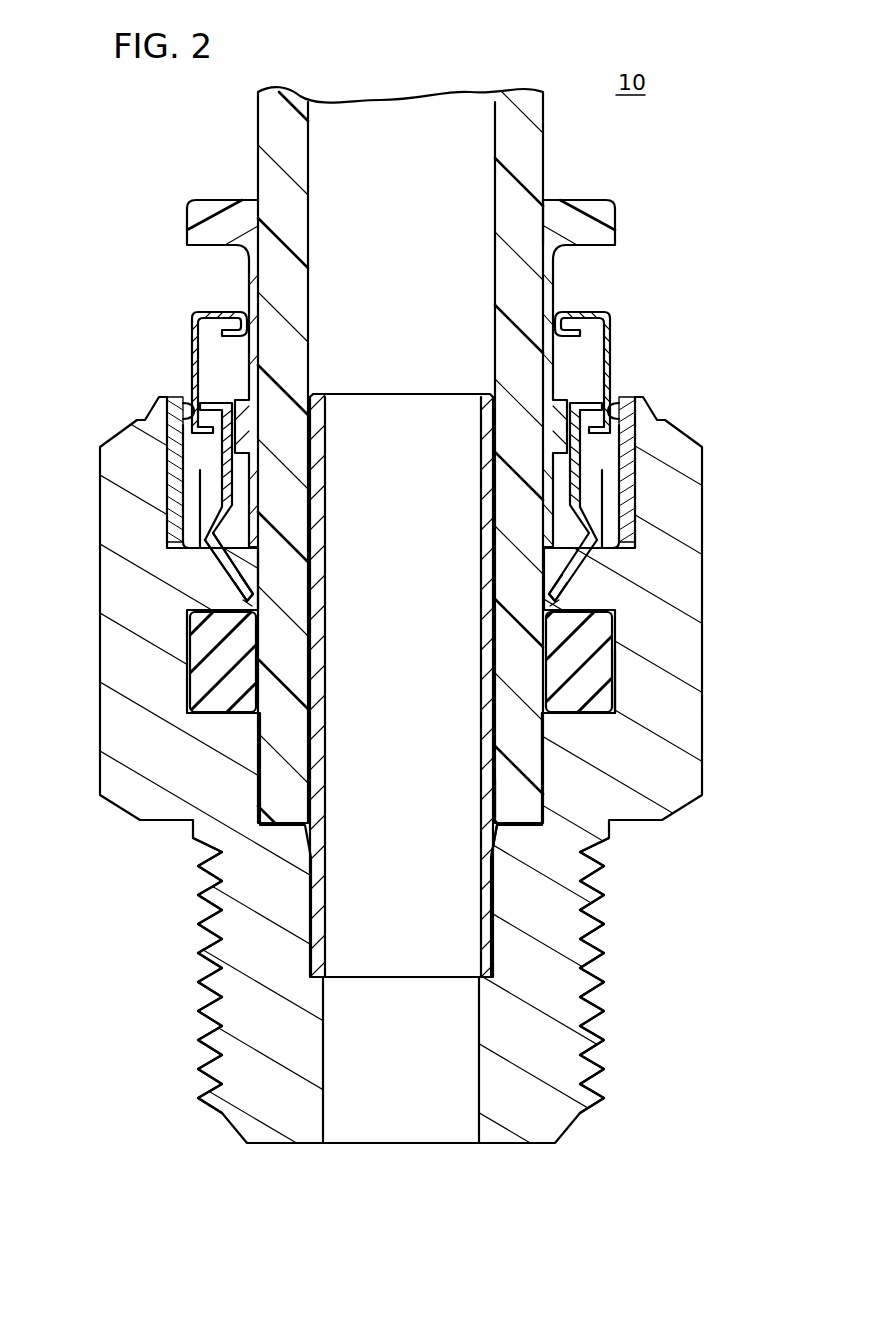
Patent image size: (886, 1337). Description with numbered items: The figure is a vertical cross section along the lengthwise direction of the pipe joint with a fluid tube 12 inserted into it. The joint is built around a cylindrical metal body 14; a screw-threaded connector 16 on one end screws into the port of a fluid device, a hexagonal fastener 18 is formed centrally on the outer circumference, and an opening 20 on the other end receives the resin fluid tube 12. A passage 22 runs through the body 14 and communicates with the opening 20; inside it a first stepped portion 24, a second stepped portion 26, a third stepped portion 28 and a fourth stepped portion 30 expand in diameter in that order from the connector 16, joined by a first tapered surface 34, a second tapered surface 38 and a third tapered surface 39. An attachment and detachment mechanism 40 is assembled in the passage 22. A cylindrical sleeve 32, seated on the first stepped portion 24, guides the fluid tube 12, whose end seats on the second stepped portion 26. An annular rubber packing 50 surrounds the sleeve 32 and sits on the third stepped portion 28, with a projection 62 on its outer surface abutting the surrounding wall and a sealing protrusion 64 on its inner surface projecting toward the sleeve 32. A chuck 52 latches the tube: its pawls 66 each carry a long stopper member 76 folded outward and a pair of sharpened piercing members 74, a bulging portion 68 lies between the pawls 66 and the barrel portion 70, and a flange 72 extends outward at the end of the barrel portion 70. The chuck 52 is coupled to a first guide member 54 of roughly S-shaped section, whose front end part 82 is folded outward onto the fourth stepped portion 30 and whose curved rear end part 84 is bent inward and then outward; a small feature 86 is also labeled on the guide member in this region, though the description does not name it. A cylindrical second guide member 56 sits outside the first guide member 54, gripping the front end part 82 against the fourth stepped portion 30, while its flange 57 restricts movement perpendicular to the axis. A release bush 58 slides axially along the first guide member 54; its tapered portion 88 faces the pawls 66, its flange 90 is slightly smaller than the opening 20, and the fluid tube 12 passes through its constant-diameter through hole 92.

The fluid tube 12 is at (279, 91).
The body 14 is at (697, 419).
The connector 16 is at (205, 995).
The fastener 18 is at (125, 730).
The opening 20 is at (178, 404).
The passage 22 is at (407, 1145).
The first stepped portion 24 is at (486, 973).
The second stepped portion 26 is at (497, 797).
The third stepped portion 28 is at (618, 694).
The fourth stepped portion 30 is at (601, 547).
The sleeve 32 is at (345, 392).
The first tapered surface 34 is at (487, 840).
The second tapered surface 38 is at (548, 713).
The third tapered surface 39 is at (620, 565).
The attachment and detachment mechanism 40 is at (607, 310).
The packing 50 is at (605, 645).
The chuck 52 is at (576, 585).
The first guide member 54 is at (613, 352).
The second guide member 56 is at (631, 494).
The flange 57 is at (620, 419).
The release bush 58 is at (599, 195).
The projection 62 is at (192, 660).
The sealing protrusion 64 is at (262, 646).
The pawls 66 is at (243, 600).
The bulging portion 68 is at (208, 532).
The barrel portion 70 is at (212, 470).
The flange 72 is at (228, 400).
The piercing members 74 is at (550, 603).
The stopper member 76 is at (548, 610).
The front end part 82 is at (196, 478).
The rear end part 84 is at (226, 310).
The projection 86 is at (183, 437).
The tapered portion 88 is at (280, 545).
The flange 90 is at (227, 209).
The through hole 92 is at (542, 232).